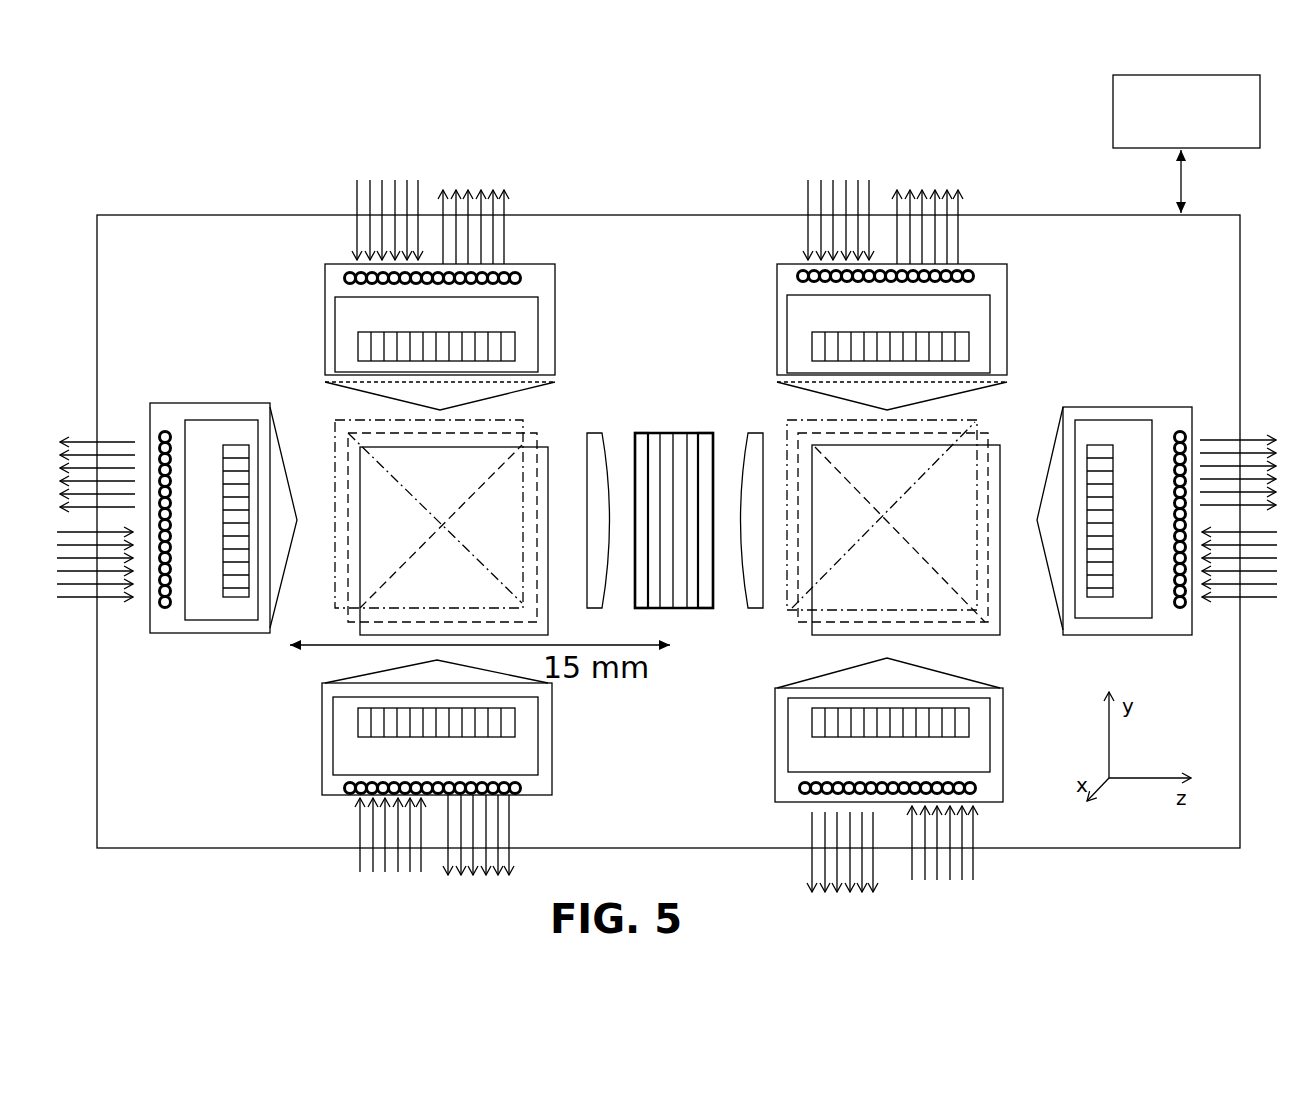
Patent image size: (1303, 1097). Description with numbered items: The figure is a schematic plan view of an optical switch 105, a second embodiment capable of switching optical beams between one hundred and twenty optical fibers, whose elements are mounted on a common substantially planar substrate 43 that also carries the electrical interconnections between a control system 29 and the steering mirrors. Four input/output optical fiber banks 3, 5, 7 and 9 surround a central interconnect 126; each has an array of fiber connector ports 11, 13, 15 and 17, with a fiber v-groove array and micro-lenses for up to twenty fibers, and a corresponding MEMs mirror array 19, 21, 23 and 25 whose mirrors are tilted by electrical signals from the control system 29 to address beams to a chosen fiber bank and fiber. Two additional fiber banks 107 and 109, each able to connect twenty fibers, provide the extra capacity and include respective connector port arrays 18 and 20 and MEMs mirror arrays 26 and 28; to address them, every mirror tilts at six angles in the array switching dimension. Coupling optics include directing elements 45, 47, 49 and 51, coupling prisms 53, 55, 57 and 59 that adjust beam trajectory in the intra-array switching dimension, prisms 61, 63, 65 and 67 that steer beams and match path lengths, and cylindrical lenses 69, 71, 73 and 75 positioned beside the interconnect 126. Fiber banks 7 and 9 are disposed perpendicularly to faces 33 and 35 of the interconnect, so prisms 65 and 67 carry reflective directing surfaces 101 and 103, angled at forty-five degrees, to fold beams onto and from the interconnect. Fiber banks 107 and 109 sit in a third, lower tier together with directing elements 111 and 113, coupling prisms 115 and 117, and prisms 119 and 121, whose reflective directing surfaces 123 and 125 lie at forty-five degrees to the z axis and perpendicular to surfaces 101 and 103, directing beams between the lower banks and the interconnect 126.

The input/output optical fiber bank 3 is at (178, 403).
The input/output optical fiber bank 5 is at (1168, 628).
The input/output optical fiber bank 7 is at (550, 705).
The input/output optical fiber bank 9 is at (1000, 712).
The fiber connector port array 11 is at (165, 608).
The fiber connector port array 13 is at (1180, 432).
The fiber connector port array 15 is at (525, 790).
The fiber connector port array 17 is at (975, 790).
The connector port array 18 is at (352, 275).
The MEMs mirror array 19 is at (238, 445).
The connector port array 20 is at (798, 272).
The MEMs mirror array 21 is at (1100, 445).
The MEMs mirror array 23 is at (360, 710).
The MEMs mirror array 25 is at (815, 710).
The MEMs mirror array 26 is at (520, 345).
The MEMs mirror array 28 is at (968, 345).
The control system 29 is at (1113, 108).
The face of interconnect 33 is at (645, 445).
The face of interconnect 35 is at (700, 440).
The planar substrate 43 is at (200, 215).
The directing element 45 is at (215, 430).
The directing element 47 is at (1095, 618).
The directing element 49 is at (345, 750).
The directing element 51 is at (798, 750).
The coupling prism 53 is at (348, 433).
The coupling prism 55 is at (235, 600).
The coupling prism 57 is at (420, 670).
The coupling prism 59 is at (870, 672).
The prism 61 is at (555, 435).
The prism 63 is at (988, 440).
The prism 65 is at (392, 428).
The prism 67 is at (830, 430).
The cylindrical lens 69 is at (597, 598).
The cylindrical lens 71 is at (752, 598).
The cylindrical lens 73 is at (643, 448).
The cylindrical lens 75 is at (712, 450).
The directing surface 101 is at (487, 485).
The directing surface 103 is at (905, 530).
The optical switch 105 is at (662, 190).
The fiber bank 107 is at (548, 290).
The fiber bank 109 is at (1003, 272).
The directing element 111 is at (340, 322).
The directing element 113 is at (793, 322).
The coupling prism 115 is at (450, 398).
The coupling prism 117 is at (905, 398).
The prism 119 is at (335, 600).
The prism 121 is at (975, 575).
The reflective directing surface 123 is at (460, 540).
The reflective directing surface 125 is at (912, 480).
The interconnect 126 is at (668, 435).